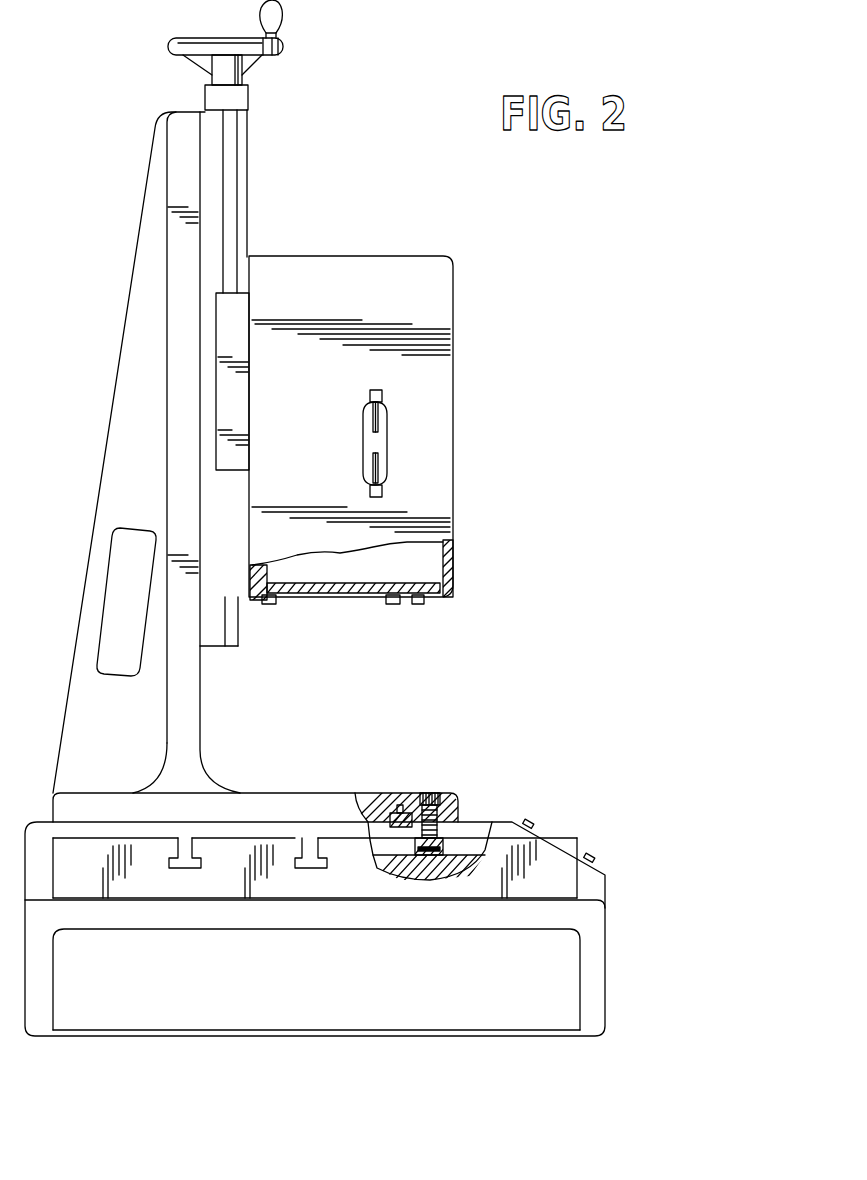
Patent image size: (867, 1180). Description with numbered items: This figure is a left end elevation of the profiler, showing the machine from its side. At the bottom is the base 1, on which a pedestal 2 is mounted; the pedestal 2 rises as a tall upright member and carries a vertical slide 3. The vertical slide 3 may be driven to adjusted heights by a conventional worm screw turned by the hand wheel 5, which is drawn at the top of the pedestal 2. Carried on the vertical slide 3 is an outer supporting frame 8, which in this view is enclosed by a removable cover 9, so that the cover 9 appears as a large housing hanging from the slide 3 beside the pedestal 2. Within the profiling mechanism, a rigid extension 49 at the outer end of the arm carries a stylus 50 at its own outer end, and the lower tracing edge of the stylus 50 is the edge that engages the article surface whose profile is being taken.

The base 1 is at (198, 732).
The pedestal 2 is at (183, 363).
The vertical slide 3 is at (224, 318).
The hand wheel 5 is at (283, 50).
The outer supporting frame 8 is at (453, 557).
The removable cover 9 is at (430, 483).
The rigid extension 49 is at (382, 396).
The stylus 50 is at (378, 420).